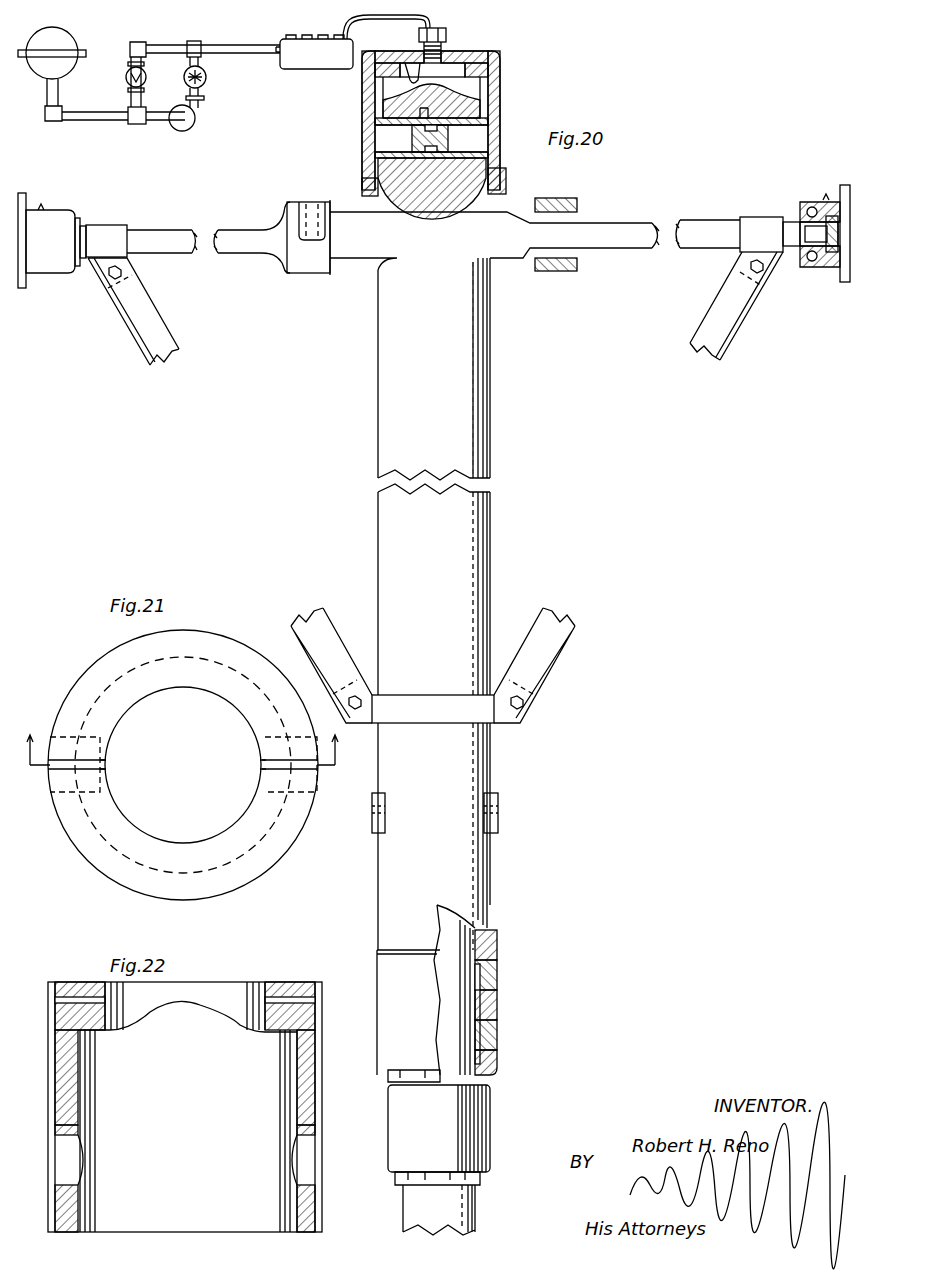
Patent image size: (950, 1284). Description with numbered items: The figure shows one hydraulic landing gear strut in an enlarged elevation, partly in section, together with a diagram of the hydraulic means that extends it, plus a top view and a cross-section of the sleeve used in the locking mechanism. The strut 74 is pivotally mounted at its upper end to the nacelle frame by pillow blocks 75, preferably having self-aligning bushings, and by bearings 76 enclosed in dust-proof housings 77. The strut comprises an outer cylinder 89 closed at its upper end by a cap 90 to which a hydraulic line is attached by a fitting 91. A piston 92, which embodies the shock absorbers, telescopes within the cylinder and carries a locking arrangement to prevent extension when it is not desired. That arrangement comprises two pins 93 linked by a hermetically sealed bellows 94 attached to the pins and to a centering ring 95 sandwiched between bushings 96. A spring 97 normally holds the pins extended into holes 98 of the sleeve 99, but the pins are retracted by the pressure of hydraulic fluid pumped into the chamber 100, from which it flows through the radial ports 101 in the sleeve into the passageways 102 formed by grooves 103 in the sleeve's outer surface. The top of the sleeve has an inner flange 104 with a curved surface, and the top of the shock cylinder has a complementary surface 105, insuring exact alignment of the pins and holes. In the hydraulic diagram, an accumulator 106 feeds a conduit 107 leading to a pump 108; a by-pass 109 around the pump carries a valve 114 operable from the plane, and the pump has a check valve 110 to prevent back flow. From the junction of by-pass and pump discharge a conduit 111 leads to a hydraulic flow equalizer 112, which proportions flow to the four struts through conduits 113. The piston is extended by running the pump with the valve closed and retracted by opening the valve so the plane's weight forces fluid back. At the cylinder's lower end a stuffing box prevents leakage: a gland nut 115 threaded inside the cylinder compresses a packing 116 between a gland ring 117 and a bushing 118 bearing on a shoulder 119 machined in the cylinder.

In FIG. 20, the strut 74 is at (509, 443).
In FIG. 20, the pillow blocks 75 is at (308, 274).
In FIG. 20, the bearings 76 is at (815, 257).
In FIG. 20, the dust-proof housings 77 is at (84, 195).
In FIG. 20, the outer cylinder 89 is at (392, 553).
In FIG. 20, the cap 90 is at (505, 188).
In FIG. 20, the fitting 91 is at (446, 35).
In FIG. 20, the piston 92 is at (462, 936).
In FIG. 20, the pins 93 is at (486, 139).
In FIG. 20, the bellows 94 is at (450, 145).
In FIG. 20, the centering ring 95 is at (418, 110).
In FIG. 20, the bushings 96 is at (410, 126).
In FIG. 20, the spring 97 is at (490, 121).
In FIG. 21, the holes 98 is at (58, 798).
In FIG. 22, the holes 98 is at (292, 1147).
In FIG. 20, the sleeve 99 is at (483, 96).
In FIG. 21, the sleeve 99 is at (283, 852).
In FIG. 22, the sleeve 99 is at (305, 1040).
In FIG. 20, the chamber 100 is at (455, 70).
In FIG. 20, the radial ports 101 is at (385, 78).
In FIG. 21, the radial ports 101 is at (110, 757).
In FIG. 22, the radial ports 101 is at (85, 985).
In FIG. 20, the passageways 102 is at (372, 176).
In FIG. 21, the grooves 103 is at (52, 764).
In FIG. 22, the grooves 103 is at (50, 1096).
In FIG. 21, the inner flange 104 is at (108, 804).
In FIG. 22, the inner flange 104 is at (161, 1018).
In FIG. 20, the surface 105 is at (408, 62).
In FIG. 20, the hydraulic accumulator 106 is at (70, 46).
In FIG. 20, the conduit 107 is at (104, 120).
In FIG. 20, the pump 108 is at (197, 120).
In FIG. 20, the by-pass 109 is at (172, 42).
In FIG. 20, the check valve 110 is at (208, 77).
In FIG. 20, the conduit 111 is at (262, 45).
In FIG. 20, the hydraulic flow equalizer 112 is at (305, 68).
In FIG. 20, the conduits 113 is at (342, 22).
In FIG. 20, the valve 114 is at (127, 78).
In FIG. 20, the gland nut 115 is at (490, 1074).
In FIG. 20, the packing 116 is at (490, 1011).
In FIG. 20, the gland ring 117 is at (492, 1038).
In FIG. 20, the bushing 118 is at (484, 980).
In FIG. 20, the shoulder 119 is at (482, 956).